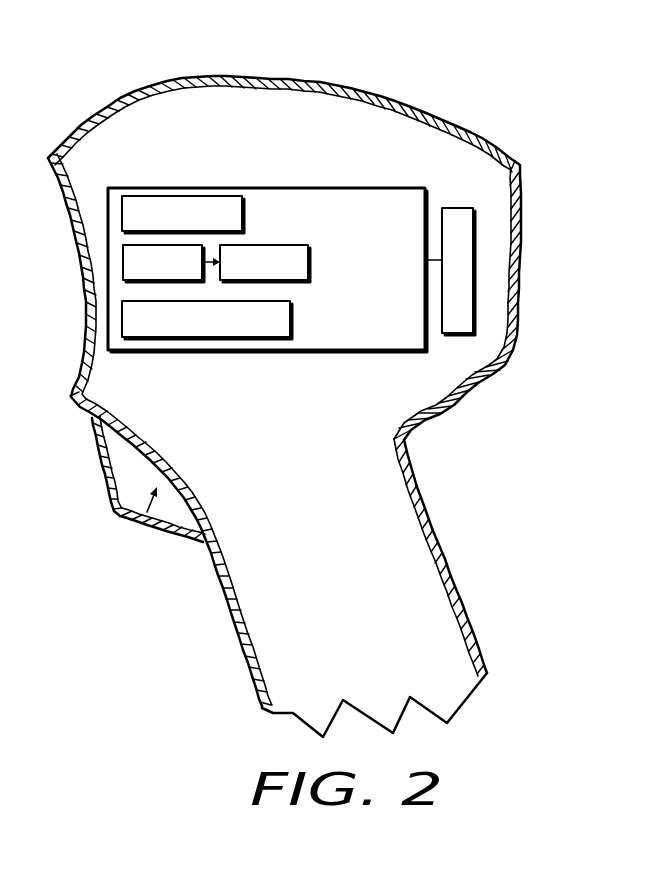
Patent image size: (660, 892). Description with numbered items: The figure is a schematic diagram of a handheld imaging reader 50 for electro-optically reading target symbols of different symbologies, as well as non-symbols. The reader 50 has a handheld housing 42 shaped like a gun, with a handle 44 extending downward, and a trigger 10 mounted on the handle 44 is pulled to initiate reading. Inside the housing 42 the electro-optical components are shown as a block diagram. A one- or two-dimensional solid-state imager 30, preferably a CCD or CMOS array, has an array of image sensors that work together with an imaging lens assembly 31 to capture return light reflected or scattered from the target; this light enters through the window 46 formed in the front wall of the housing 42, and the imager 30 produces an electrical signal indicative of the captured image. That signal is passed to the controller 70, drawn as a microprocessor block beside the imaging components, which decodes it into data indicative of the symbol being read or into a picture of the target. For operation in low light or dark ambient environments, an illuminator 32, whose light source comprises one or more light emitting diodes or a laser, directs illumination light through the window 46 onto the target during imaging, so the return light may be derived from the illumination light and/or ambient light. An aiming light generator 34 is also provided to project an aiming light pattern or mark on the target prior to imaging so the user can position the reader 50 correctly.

The trigger 10 is at (133, 540).
The imager 30 is at (310, 262).
The imaging lens assembly 31 is at (122, 260).
The illuminator 32 is at (248, 217).
The aiming light generator 34 is at (292, 322).
The handheld housing 42 is at (520, 273).
The handle 44 is at (447, 560).
The window 46 is at (82, 306).
The imaging reader 50 is at (590, 171).
The controller 70 is at (457, 207).